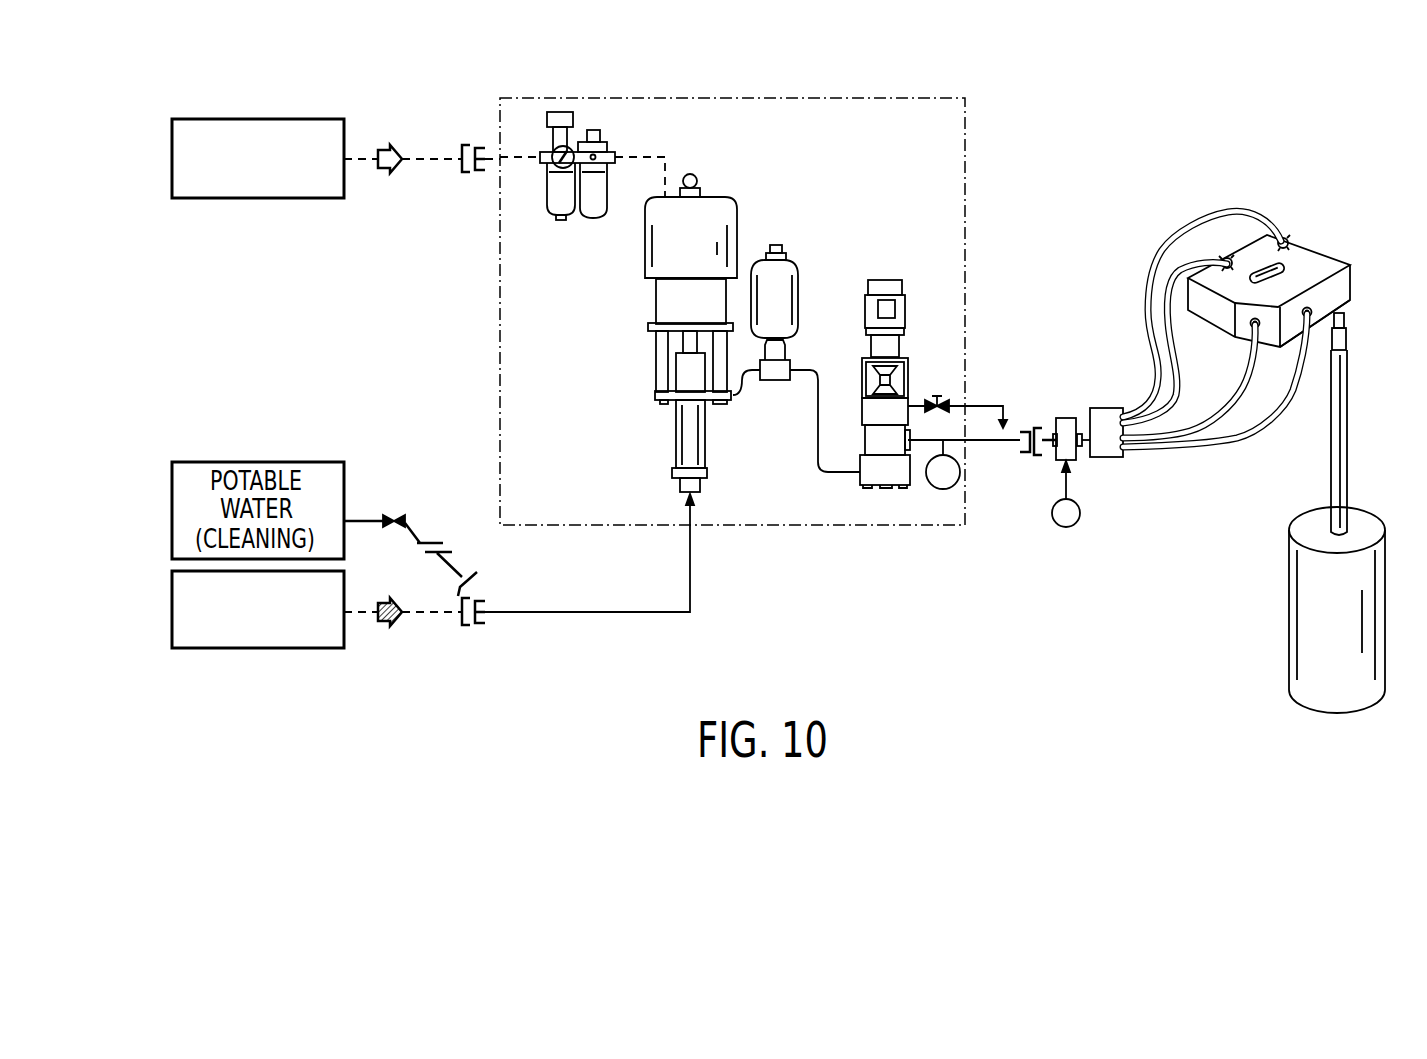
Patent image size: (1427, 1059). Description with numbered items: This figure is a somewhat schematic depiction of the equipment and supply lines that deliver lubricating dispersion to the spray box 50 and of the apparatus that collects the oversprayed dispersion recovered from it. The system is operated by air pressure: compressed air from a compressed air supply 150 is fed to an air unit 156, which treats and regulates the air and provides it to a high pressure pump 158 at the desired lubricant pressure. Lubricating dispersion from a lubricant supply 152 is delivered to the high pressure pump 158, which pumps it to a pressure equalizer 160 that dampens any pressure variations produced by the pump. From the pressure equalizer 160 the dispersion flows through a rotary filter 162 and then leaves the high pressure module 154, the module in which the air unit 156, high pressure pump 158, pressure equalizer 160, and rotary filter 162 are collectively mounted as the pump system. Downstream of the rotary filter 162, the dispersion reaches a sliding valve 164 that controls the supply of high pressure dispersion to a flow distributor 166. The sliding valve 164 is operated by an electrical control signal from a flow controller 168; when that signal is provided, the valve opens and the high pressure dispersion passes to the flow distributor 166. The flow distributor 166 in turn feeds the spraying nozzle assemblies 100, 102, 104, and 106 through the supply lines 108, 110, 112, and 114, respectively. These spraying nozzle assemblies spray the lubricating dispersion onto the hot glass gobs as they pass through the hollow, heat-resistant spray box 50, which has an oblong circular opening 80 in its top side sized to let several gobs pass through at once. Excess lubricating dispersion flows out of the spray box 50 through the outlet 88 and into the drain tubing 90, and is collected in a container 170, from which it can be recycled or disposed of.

The spray box 50 is at (1340, 244).
The oblong circular opening 80 is at (1260, 268).
The outlet 88 is at (1345, 318).
The drain tubing 90 is at (1348, 440).
The spraying nozzle assembly 100 is at (1249, 326).
The spraying nozzle assembly 102 is at (1300, 236).
The spraying nozzle assembly 104 is at (1350, 299).
The spraying nozzle assembly 106 is at (1237, 240).
The supply line 108 is at (1208, 424).
The supply line 110 is at (1153, 267).
The supply line 112 is at (1278, 421).
The supply line 114 is at (1163, 309).
The compressed air supply 150 is at (172, 160).
The lubricant supply 152 is at (172, 609).
The high pressure module 154 is at (733, 96).
The air unit 156 is at (575, 140).
The high pressure pump 158 is at (656, 298).
The pressure equalizer 160 is at (798, 293).
The rotary filter 162 is at (885, 488).
The sliding valve 164 is at (1066, 418).
The flow distributor 166 is at (1105, 457).
The flow controller 168 is at (1080, 515).
The container 170 is at (1330, 713).